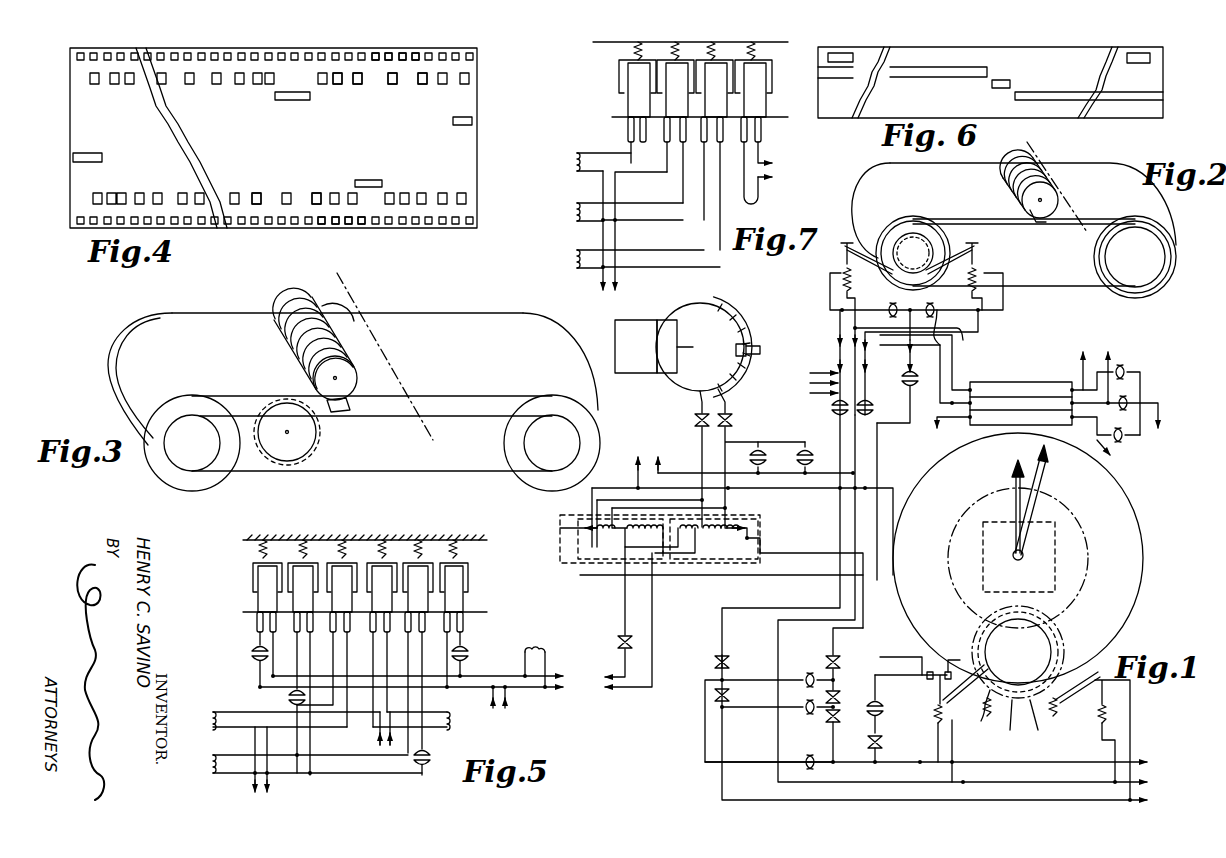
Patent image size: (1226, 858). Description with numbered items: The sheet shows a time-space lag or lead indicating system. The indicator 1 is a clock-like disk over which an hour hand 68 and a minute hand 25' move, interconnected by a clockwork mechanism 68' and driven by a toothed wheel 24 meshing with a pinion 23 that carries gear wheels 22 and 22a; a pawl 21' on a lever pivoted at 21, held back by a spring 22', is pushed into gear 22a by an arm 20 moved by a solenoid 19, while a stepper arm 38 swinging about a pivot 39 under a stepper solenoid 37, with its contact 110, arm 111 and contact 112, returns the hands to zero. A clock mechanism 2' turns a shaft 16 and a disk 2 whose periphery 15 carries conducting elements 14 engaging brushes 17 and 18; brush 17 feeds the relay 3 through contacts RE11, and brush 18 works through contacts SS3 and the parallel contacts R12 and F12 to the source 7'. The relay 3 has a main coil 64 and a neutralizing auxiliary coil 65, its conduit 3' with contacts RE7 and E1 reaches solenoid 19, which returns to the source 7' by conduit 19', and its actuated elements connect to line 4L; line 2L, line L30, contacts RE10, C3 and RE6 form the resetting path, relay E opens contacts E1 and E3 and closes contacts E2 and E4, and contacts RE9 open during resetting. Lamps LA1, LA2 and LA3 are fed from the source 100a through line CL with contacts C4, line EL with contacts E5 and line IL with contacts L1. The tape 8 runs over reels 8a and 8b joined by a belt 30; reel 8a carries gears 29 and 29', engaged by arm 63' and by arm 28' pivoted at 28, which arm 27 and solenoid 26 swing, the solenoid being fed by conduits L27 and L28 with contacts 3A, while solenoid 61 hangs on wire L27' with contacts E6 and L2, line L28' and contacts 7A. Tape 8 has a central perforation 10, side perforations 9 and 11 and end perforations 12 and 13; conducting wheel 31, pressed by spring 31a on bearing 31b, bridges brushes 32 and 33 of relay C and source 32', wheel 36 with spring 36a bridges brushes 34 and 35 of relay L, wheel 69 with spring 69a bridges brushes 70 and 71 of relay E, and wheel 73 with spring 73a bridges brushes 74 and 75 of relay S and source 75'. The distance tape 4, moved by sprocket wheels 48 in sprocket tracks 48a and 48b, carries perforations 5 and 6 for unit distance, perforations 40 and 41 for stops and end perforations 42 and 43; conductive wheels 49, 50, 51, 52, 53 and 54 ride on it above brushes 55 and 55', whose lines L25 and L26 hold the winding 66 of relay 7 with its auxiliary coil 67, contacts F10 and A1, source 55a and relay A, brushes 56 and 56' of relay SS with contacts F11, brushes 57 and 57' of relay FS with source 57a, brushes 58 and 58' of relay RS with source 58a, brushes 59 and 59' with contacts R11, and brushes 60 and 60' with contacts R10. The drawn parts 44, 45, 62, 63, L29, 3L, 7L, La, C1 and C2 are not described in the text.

In FIG. 1, the clock 1 is at (1146, 581).
In FIG. 1, the distributor drum 2 is at (700, 334).
In FIG. 1, the motor 2' is at (628, 346).
In FIG. 1, the relay unit 3 is at (668, 539).
In FIG. 1, the conductor 3' is at (922, 607).
In FIG. 4, the perforated record tape 4 is at (477, 163).
In FIG. 3, the perforated record tape 4 is at (444, 322).
In FIG. 5, the perforated record tape 4 is at (246, 618).
In FIG. 4, the perforations 5 is at (309, 191).
In FIG. 3, the perforations 5 is at (333, 276).
In FIG. 4, the perforations 6 is at (398, 84).
In FIG. 2, the sensing unit 7 is at (1045, 188).
In FIG. 5, the sensing unit 7 is at (543, 529).
In FIG. 1, the conductor 7' is at (742, 450).
In FIG. 7, the record strip 8 is at (592, 122).
In FIG. 6, the record strip 8 is at (1045, 109).
In FIG. 2, the record strip 8 is at (992, 170).
In FIG. 2, the roller 8a is at (910, 220).
In FIG. 2, the roller 8b is at (1176, 257).
In FIG. 6, the conductive strip 9 is at (1048, 92).
In FIG. 6, the conductive strip 10 is at (998, 80).
In FIG. 6, the conductive strip 11 is at (956, 67).
In FIG. 6, the conductive strip 12 is at (1134, 53).
In FIG. 6, the conductive strip 13 is at (845, 53).
In FIG. 1, the drum ring 14 is at (748, 334).
In FIG. 1, the ring segment 15 is at (743, 318).
In FIG. 1, the shaft 16 is at (684, 347).
In FIG. 1, the brush 17 is at (734, 354).
In FIG. 1, the brush 18 is at (754, 356).
In FIG. 1, the spring 19 is at (1097, 743).
In FIG. 1, the conductor 19' is at (949, 598).
In FIG. 1, the contact arm 20 is at (1108, 688).
In FIG. 1, the pawl 21 is at (1074, 702).
In FIG. 1, the pawl 21' is at (1071, 676).
In FIG. 1, the pawl 22 is at (1039, 724).
In FIG. 1, the pawl 22' is at (1049, 748).
In FIG. 1, the pawl 22a is at (1015, 724).
In FIG. 1, the ratchet wheel 23 is at (1052, 624).
In FIG. 1, the ratchet ring 24 is at (980, 628).
In FIG. 1, the clock hand 25' is at (1043, 500).
In FIG. 2, the spring 26 is at (843, 276).
In FIG. 2, the contact arm 27 is at (832, 248).
In FIG. 2, the pawl 28 is at (869, 269).
In FIG. 2, the pawl 28' is at (848, 212).
In FIG. 2, the wheel 29 is at (913, 253).
In FIG. 2, the wheel 29' is at (879, 221).
In FIG. 2, the belt 30 is at (1054, 286).
In FIG. 7, the sensing roller 31 is at (679, 68).
In FIG. 2, the sensing roller 31 is at (1043, 168).
In FIG. 7, the roller segment 31a is at (678, 65).
In FIG. 7, the roller segment 31b is at (672, 60).
In FIG. 7, the contact pin 32 is at (661, 144).
In FIG. 7, the terminal 32' is at (658, 240).
In FIG. 7, the contact pin 33 is at (688, 144).
In FIG. 7, the contact pin 34 is at (707, 144).
In FIG. 7, the contact pin 35 is at (724, 144).
In FIG. 7, the roller segment 36 is at (718, 68).
In FIG. 2, the roller segment 36 is at (1010, 192).
In FIG. 7, the roller segment 36a is at (708, 62).
In FIG. 1, the spring 37 is at (990, 710).
In FIG. 1, the contact arm 38 is at (919, 684).
In FIG. 1, the pawl 39 is at (974, 696).
In FIG. 4, the conductive strip 40 is at (368, 180).
In FIG. 4, the conductive strip 41 is at (300, 100).
In FIG. 4, the conductive strip 42 is at (99, 153).
In FIG. 4, the conductive strip 43 is at (470, 117).
In FIG. 3, the roller 44 is at (214, 475).
In FIG. 3, the roller 45 is at (505, 446).
In FIG. 3, the sprocket 48 is at (320, 442).
In FIG. 4, the sprocket holes 48a is at (322, 224).
In FIG. 4, the sprocket holes 48b is at (418, 53).
In FIG. 3, the sensing finger 49 is at (312, 371).
In FIG. 5, the sensing finger 49 is at (262, 593).
In FIG. 3, the sensing finger 50 is at (335, 340).
In FIG. 5, the sensing finger 50 is at (306, 574).
In FIG. 3, the sensing finger 51 is at (306, 346).
In FIG. 5, the sensing finger 51 is at (346, 574).
In FIG. 3, the sensing finger 52 is at (324, 323).
In FIG. 5, the sensing finger 52 is at (386, 574).
In FIG. 3, the sensing finger 53 is at (286, 328).
In FIG. 5, the sensing finger 53 is at (422, 574).
In FIG. 3, the sensing finger 54 is at (280, 310).
In FIG. 5, the sensing finger 54 is at (464, 594).
In FIG. 5, the contact 55 is at (244, 649).
In FIG. 5, the contact 55' is at (285, 644).
In FIG. 5, the terminal 55a is at (497, 716).
In FIG. 5, the contact 56 is at (289, 692).
In FIG. 5, the contact 56' is at (320, 693).
In FIG. 5, the contact 57 is at (324, 648).
In FIG. 5, the contact 57' is at (359, 669).
In FIG. 5, the terminal 57a is at (276, 796).
In FIG. 5, the contact 58 is at (366, 661).
In FIG. 5, the contact 58' is at (399, 662).
In FIG. 5, the terminal 58a is at (387, 736).
In FIG. 5, the contact 59 is at (417, 672).
In FIG. 5, the contact 59' is at (434, 693).
In FIG. 5, the contact 60 is at (474, 644).
In FIG. 5, the contact 60' is at (469, 649).
In FIG. 2, the spring 61 is at (975, 284).
In FIG. 2, the contact arm 62 is at (972, 256).
In FIG. 2, the pawl 63 is at (951, 246).
In FIG. 2, the pawl 63' is at (988, 240).
In FIG. 1, the relay coil 64 is at (713, 528).
In FIG. 1, the relay coil 65 is at (684, 532).
In FIG. 1, the relay coil 66 is at (645, 530).
In FIG. 1, the relay coil 67 is at (612, 530).
In FIG. 1, the clock hand 68 is at (1002, 510).
In FIG. 1, the window 68' is at (1031, 558).
In FIG. 7, the contact block 69 is at (636, 97).
In FIG. 2, the contact block 69 is at (1056, 192).
In FIG. 7, the spring 69a is at (634, 50).
In FIG. 7, the contact pin 70 is at (626, 130).
In FIG. 2, the contact pin 70 is at (1040, 222).
In FIG. 7, the contact pin 71 is at (645, 142).
In FIG. 2, the contact pin 71 is at (1030, 220).
In FIG. 7, the contact block 73 is at (764, 97).
In FIG. 2, the contact block 73 is at (1006, 174).
In FIG. 7, the spring 73a is at (754, 52).
In FIG. 7, the contact pin 74 is at (756, 128).
In FIG. 7, the contact pin 75 is at (781, 150).
In FIG. 7, the terminal 75' is at (810, 171).
In FIG. 1, the battery 100a is at (940, 430).
In FIG. 1, the conductor 110 is at (954, 664).
In FIG. 1, the conductor 111 is at (930, 672).
In FIG. 1, the conductor 112 is at (918, 663).
In FIG. 7, the coil E is at (594, 162).
In FIG. 7, the coil C is at (620, 211).
In FIG. 7, the coil L is at (631, 258).
In FIG. 7, the coil S is at (749, 217).
In FIG. 5, the coil A is at (535, 657).
In FIG. 1, the relay contact A1 is at (614, 612).
In FIG. 1, the relay contact RE11 is at (686, 459).
In FIG. 1, the relay contact SS3 is at (761, 458).
In FIG. 1, the relay contact R12 is at (773, 457).
In FIG. 1, the relay contact F12 is at (819, 457).
In FIG. 1, the relay contact 3A is at (830, 407).
In FIG. 1, the relay contact 7A is at (874, 407).
In FIG. 1, the relay contact RE6 is at (926, 377).
In FIG. 1, the lead L27 is at (823, 375).
In FIG. 1, the lead L28 is at (887, 362).
In FIG. 1, the lead L29 is at (866, 342).
In FIG. 1, the lead L30 is at (908, 347).
In FIG. 1, the lead L27' is at (954, 336).
In FIG. 1, the lead L28' is at (977, 343).
In FIG. 2, the relay coil L2 is at (930, 295).
In FIG. 2, the relay coil E6 is at (916, 300).
In FIG. 1, the lamp LA1 is at (1055, 425).
In FIG. 1, the lamp LA2 is at (1066, 382).
In FIG. 1, the lamp LA3 is at (986, 383).
In FIG. 1, the lead IL is at (1079, 362).
In FIG. 1, the lead EL is at (1093, 369).
In FIG. 1, the relay coil L1 is at (1111, 393).
In FIG. 1, the relay coil E5 is at (1123, 396).
In FIG. 1, the relay coil C4 is at (1105, 428).
In FIG. 1, the lead CL is at (1115, 454).
In FIG. 1, the lead 2L is at (877, 453).
In FIG. 1, the lead 3L is at (814, 373).
In FIG. 1, the lead 7L is at (814, 388).
In FIG. 1, the lead La is at (1066, 782).
In FIG. 1, the lead 4L is at (1150, 800).
In FIG. 1, the relay contact RE7 is at (738, 662).
In FIG. 1, the relay contact E1 is at (769, 720).
In FIG. 1, the relay coil C1 is at (777, 672).
In FIG. 1, the relay coil E2 is at (777, 714).
In FIG. 1, the relay coil E4 is at (811, 754).
In FIG. 1, the relay contact RE9 is at (850, 659).
In FIG. 1, the relay contact C2 is at (845, 698).
In FIG. 1, the relay contact E3 is at (845, 735).
In FIG. 1, the relay contact RE10 is at (893, 704).
In FIG. 1, the relay contact C3 is at (886, 748).
In FIG. 1, the lead L25 is at (614, 676).
In FIG. 5, the lead L25 is at (552, 672).
In FIG. 1, the lead L26 is at (620, 688).
In FIG. 5, the lead L26 is at (552, 700).
In FIG. 5, the relay contact F10 is at (248, 655).
In FIG. 5, the relay contact R10 is at (475, 655).
In FIG. 5, the relay contact F11 is at (285, 697).
In FIG. 5, the relay contact R11 is at (439, 757).
In FIG. 5, the relay coil FS is at (288, 720).
In FIG. 5, the relay coil SS is at (309, 764).
In FIG. 5, the relay coil RS is at (423, 720).